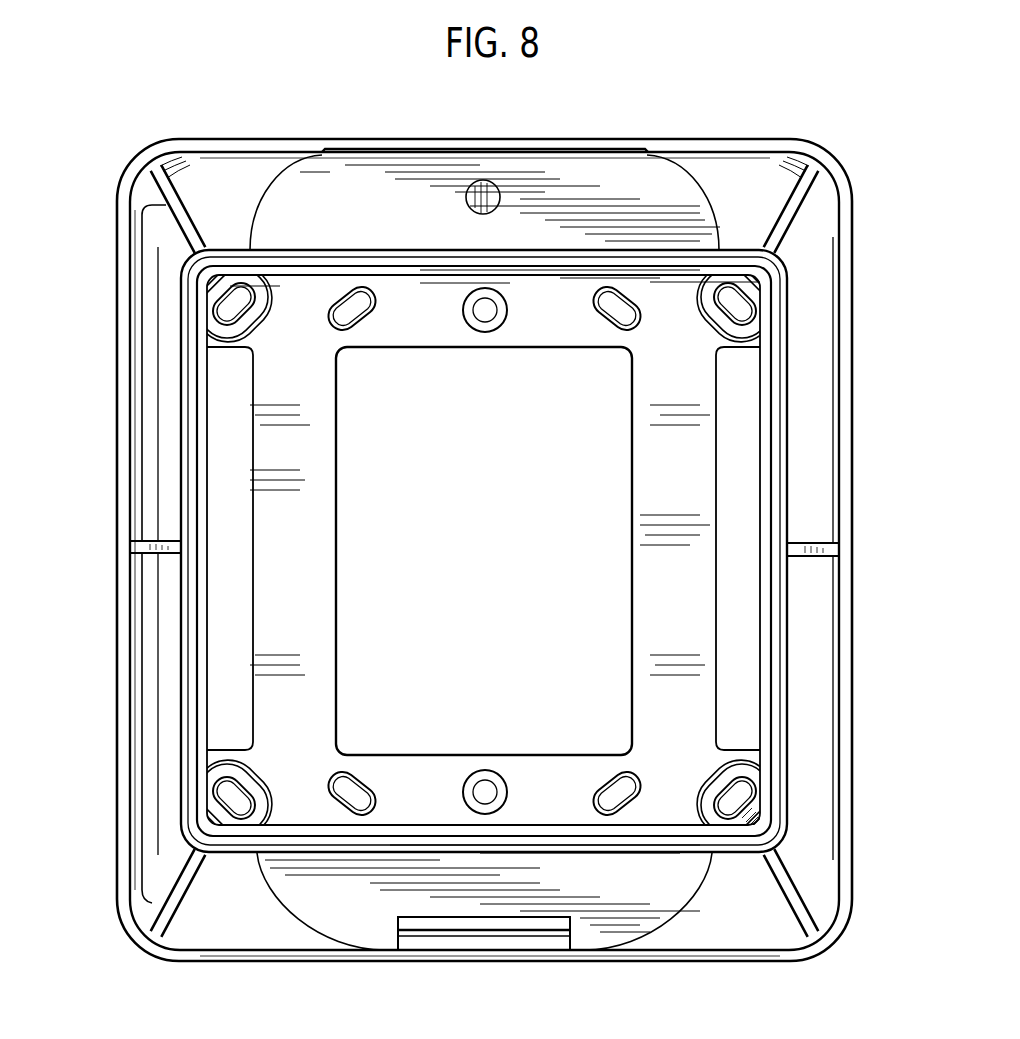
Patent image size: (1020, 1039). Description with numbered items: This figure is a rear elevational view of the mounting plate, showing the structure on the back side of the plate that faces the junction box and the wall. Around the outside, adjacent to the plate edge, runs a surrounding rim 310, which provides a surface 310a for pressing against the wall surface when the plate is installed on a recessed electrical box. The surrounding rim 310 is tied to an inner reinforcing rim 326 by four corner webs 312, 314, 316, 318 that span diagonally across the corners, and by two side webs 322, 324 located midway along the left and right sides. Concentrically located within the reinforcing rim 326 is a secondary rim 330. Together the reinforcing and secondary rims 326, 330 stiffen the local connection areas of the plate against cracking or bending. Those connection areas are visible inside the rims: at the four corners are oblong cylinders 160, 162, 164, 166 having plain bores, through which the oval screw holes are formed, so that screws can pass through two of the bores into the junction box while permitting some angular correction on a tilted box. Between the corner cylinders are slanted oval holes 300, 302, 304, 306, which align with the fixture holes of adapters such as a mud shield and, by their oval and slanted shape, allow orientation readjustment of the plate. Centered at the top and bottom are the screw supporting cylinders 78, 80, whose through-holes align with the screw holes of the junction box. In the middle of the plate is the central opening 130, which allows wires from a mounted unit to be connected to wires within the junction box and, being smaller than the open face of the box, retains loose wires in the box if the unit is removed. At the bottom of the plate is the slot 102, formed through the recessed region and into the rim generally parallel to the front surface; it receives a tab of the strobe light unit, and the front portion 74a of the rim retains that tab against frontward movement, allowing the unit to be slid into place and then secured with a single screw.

The surrounding rim 310 is at (128, 188).
The surface 310a is at (240, 98).
The corner web 312 is at (180, 153).
The corner web 314 is at (800, 192).
The corner web 316 is at (838, 893).
The corner web 318 is at (192, 950).
The side web 322 is at (169, 540).
The side web 324 is at (797, 543).
The reinforcing rim 326 is at (336, 373).
The secondary rim 330 is at (364, 328).
The slanted oval hole 302 is at (373, 313).
The slanted oval hole 300 is at (620, 322).
The slanted oval hole 304 is at (603, 786).
The slanted oval hole 306 is at (363, 774).
The screw supporting cylinder 78 is at (500, 324).
The screw supporting cylinder 80 is at (497, 775).
The central opening 130 is at (338, 588).
The oblong cylinder 160 is at (248, 320).
The oblong cylinder 162 is at (714, 325).
The oblong cylinder 164 is at (725, 778).
The oblong cylinder 166 is at (250, 785).
The slot 102 is at (399, 944).
The front portion of the rim 74a is at (528, 945).